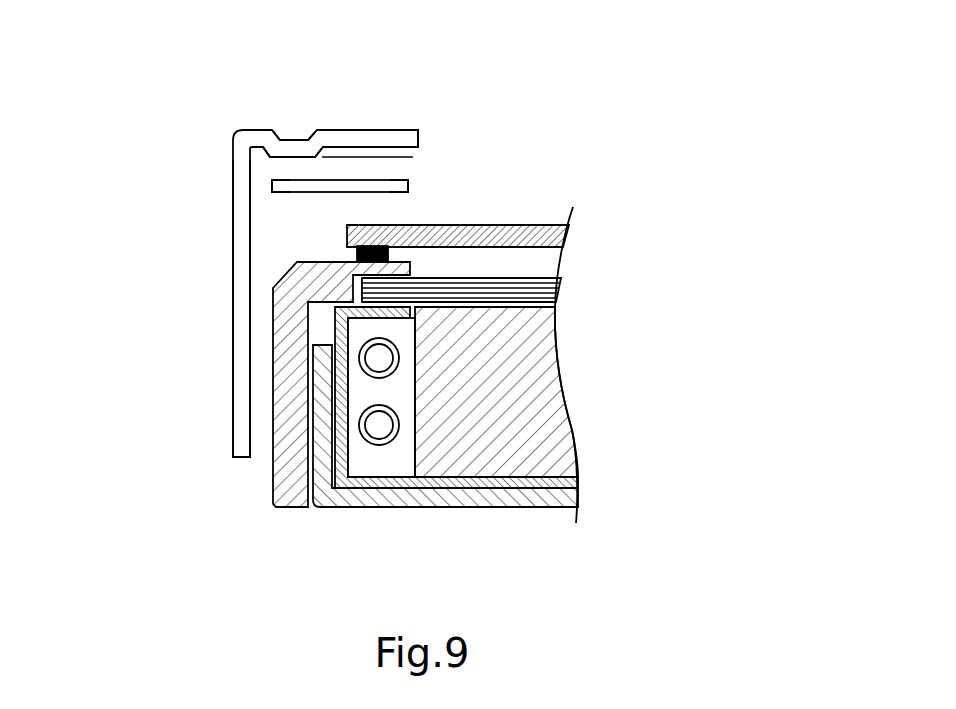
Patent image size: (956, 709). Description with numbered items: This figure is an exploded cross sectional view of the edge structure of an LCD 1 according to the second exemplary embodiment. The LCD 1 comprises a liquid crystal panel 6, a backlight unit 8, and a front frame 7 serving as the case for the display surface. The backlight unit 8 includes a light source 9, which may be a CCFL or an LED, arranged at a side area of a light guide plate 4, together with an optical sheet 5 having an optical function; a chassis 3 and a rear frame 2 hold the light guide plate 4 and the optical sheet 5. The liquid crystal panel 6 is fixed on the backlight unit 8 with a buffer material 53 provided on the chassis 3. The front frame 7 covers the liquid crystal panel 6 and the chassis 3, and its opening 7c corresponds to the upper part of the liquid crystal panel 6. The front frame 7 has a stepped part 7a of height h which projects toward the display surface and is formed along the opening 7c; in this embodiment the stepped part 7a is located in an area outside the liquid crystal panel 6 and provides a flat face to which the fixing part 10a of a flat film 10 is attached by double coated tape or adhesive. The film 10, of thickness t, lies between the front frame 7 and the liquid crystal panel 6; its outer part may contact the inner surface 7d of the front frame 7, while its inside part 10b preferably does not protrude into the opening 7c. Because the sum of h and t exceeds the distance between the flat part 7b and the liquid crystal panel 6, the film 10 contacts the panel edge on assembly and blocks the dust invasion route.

The LCD 1 is at (87, 128).
The rear frame 2 is at (570, 497).
The chassis 3 is at (287, 503).
The light guide plate 4 is at (547, 367).
The optical sheet 5 is at (540, 278).
The liquid crystal panel 6 is at (520, 223).
The front frame 7 is at (248, 133).
The stepped part 7a is at (292, 140).
The flat part 7b is at (352, 138).
The opening 7c is at (438, 145).
The inner surface 7d is at (250, 290).
The backlight unit 8 is at (575, 555).
The light source 9 is at (382, 427).
The film 10 is at (317, 183).
The fixing part 10a is at (278, 180).
The inside part 10b is at (400, 178).
The buffer material 53 is at (357, 252).
The height of the stepped part h is at (392, 172).
The thickness of the film t is at (363, 163).